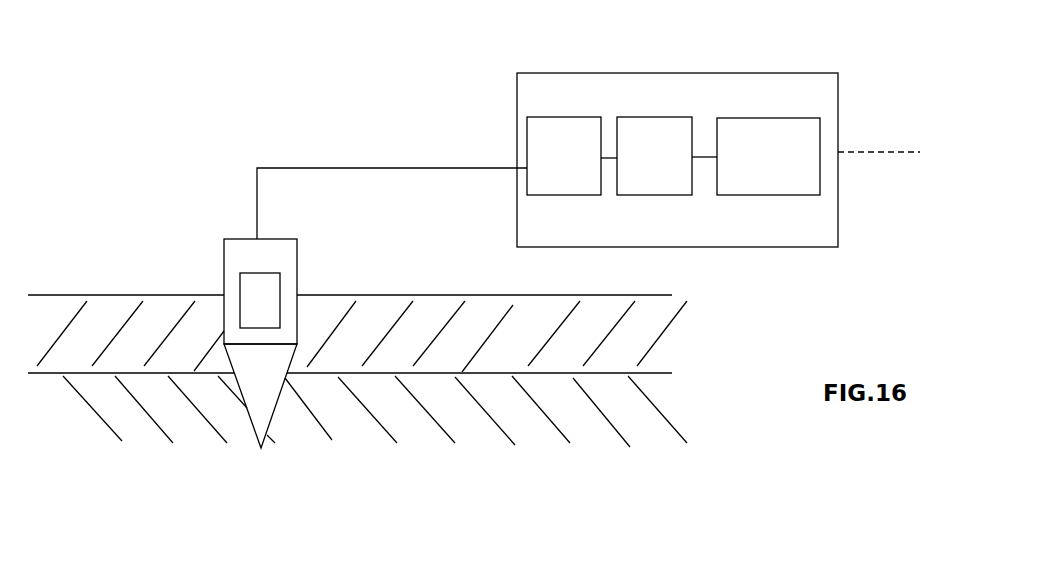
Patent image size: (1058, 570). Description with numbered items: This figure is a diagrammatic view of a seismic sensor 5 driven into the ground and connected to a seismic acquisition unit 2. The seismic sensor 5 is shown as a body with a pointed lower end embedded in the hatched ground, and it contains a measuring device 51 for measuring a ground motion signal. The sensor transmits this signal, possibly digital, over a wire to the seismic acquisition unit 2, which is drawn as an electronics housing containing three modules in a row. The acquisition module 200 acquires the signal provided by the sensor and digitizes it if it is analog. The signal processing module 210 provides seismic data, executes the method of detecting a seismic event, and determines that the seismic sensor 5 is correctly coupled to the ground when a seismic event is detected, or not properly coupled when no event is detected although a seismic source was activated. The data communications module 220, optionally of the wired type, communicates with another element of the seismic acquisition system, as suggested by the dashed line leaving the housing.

The seismic acquisition unit 2 is at (726, 68).
The seismic sensor 5 is at (201, 240).
The measuring device 51 is at (260, 300).
The acquisition module 200 is at (564, 156).
The signal processing module 210 is at (654, 156).
The data communications module 220 is at (768, 156).